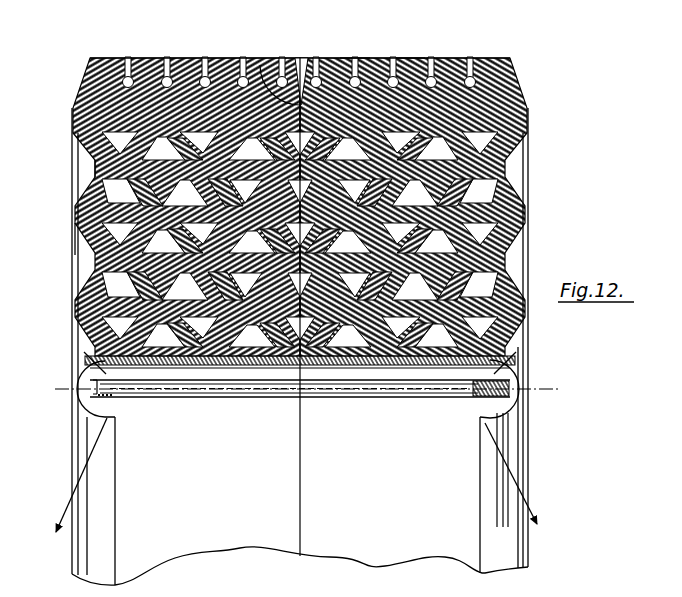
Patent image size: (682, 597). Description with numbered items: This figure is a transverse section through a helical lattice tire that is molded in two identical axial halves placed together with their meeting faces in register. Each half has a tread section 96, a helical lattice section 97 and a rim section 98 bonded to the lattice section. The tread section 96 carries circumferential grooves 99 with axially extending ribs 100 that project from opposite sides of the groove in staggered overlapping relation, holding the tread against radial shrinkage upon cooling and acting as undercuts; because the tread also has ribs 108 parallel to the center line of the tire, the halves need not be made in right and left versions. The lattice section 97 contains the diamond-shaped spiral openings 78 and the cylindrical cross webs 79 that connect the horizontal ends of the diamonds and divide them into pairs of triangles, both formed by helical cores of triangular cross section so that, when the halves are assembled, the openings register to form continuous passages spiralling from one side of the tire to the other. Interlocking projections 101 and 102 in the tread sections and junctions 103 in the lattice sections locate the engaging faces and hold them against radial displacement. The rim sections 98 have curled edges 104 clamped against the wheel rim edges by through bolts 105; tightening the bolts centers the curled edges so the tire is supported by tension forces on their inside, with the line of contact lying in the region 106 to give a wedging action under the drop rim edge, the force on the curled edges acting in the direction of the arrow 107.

The spiral openings 78 is at (105, 184).
The cross webs 79 is at (73, 250).
The tread section 96 is at (73, 109).
The helical lattice section 97 is at (100, 214).
The rim section 98 is at (93, 356).
The circumferential grooves 99 is at (357, 58).
The axially extending ribs 100 is at (175, 60).
The interlocking projection 101 is at (306, 57).
The interlocking projection 102 is at (261, 60).
The junctions 103 is at (408, 158).
The curled edges 104 is at (87, 492).
The through bolts 105 is at (375, 394).
The region of line of contact 106 is at (476, 399).
The arrow 107 is at (552, 491).
The ribs 108 is at (409, 58).